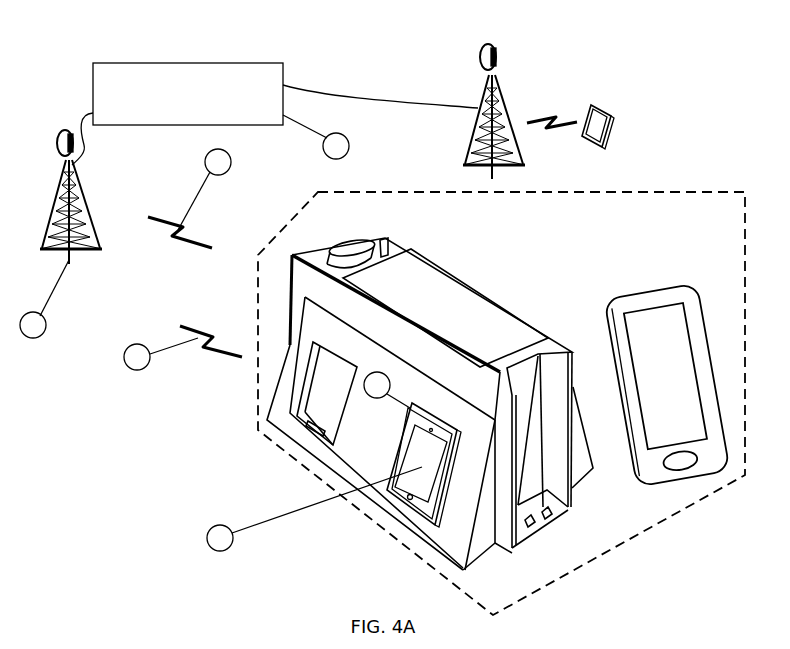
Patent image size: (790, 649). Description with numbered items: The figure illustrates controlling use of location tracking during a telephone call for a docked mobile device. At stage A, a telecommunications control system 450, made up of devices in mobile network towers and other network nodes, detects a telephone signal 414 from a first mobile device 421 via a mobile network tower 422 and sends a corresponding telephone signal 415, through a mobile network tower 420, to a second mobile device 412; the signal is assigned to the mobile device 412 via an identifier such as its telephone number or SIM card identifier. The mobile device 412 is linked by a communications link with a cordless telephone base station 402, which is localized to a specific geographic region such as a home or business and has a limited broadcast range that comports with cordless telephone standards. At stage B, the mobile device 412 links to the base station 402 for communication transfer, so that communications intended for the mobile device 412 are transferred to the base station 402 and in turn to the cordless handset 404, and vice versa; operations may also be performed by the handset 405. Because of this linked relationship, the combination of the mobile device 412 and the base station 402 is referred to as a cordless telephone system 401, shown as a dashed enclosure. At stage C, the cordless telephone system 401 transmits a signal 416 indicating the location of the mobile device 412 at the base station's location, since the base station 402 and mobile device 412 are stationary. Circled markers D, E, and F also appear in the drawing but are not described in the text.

The cordless telephone system 401 is at (613, 550).
The cordless telephone base station 402 is at (400, 385).
The cordless handset 404 is at (657, 277).
The handset 405 is at (356, 250).
The second mobile device 412 is at (397, 456).
The telephone signal 414 is at (570, 130).
The telephone signal 415 is at (203, 241).
The signal 416 is at (190, 330).
The mobile network tower 420 is at (58, 168).
The first mobile device 421 is at (614, 126).
The mobile network tower 422 is at (503, 99).
The telecommunications control system 450 is at (138, 61).
The stage A is at (204, 189).
The stage B is at (387, 390).
The stage C is at (161, 354).
The communication path D is at (314, 509).
The communication path E is at (44, 299).
The communication path F is at (316, 137).